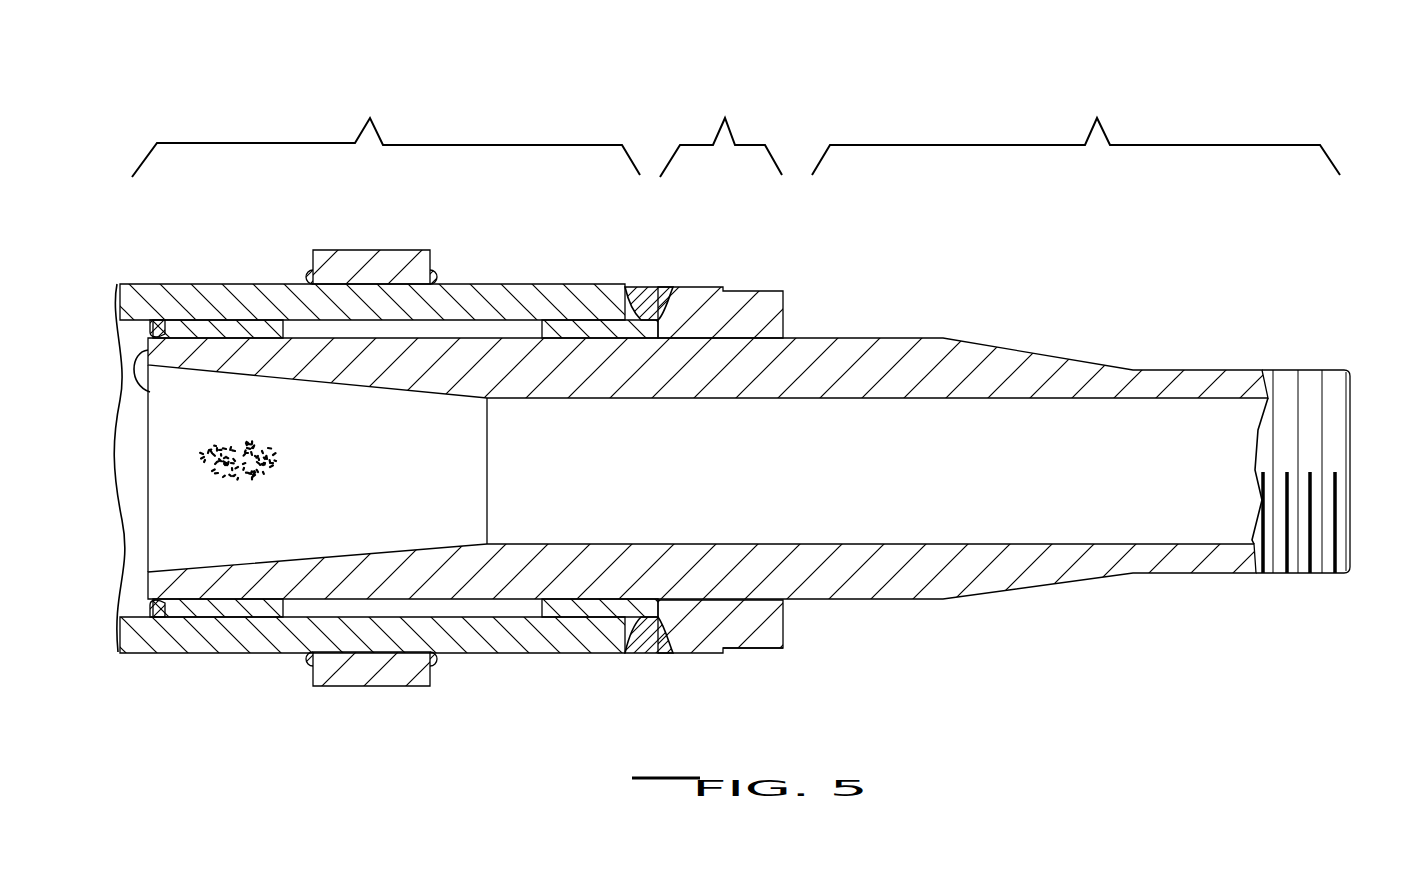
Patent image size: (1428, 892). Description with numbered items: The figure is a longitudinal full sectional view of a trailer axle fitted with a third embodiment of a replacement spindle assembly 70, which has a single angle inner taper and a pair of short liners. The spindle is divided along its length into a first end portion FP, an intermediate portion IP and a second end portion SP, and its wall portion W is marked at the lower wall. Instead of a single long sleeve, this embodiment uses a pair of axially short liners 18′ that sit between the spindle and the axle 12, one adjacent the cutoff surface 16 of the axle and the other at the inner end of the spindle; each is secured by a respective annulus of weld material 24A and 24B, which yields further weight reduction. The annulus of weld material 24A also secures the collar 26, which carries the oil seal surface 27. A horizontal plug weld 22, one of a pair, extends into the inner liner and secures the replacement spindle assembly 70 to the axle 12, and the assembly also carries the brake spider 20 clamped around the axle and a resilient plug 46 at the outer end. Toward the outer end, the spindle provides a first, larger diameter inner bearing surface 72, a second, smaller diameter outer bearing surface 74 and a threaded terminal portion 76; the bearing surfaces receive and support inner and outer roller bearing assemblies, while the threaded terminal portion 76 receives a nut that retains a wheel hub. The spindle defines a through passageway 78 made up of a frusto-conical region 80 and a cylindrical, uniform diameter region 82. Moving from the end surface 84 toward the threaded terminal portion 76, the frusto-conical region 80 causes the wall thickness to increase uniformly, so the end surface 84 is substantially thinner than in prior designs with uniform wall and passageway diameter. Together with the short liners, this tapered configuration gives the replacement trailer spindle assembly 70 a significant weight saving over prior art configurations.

The axle 12 is at (452, 296).
The cutoff surface 16 is at (650, 654).
The first spacer ring 18′ is at (205, 330).
The brake spider 20 is at (365, 252).
The horizontal plug weld 22 is at (240, 476).
The annulus of weld material 24A is at (650, 288).
The annulus of weld material 24B is at (157, 618).
The collar 26 is at (745, 305).
The oil seal surface 27 is at (757, 649).
The resilient plug 46 is at (1352, 457).
The replacement spindle assembly 70 is at (956, 325).
The inner bearing surface 72 is at (870, 338).
The outer bearing surface 74 is at (1195, 370).
The threaded terminal portion 76 is at (1302, 370).
The through passageway 78 is at (458, 468).
The frusto-conical region 80 is at (378, 393).
The cylindrical region 82 is at (1058, 399).
The end surface 84 is at (150, 392).
The wall portion W is at (527, 574).
The second end portion SP is at (386, 131).
The intermediate portion IP is at (721, 131).
The first end portion FP is at (1076, 130).